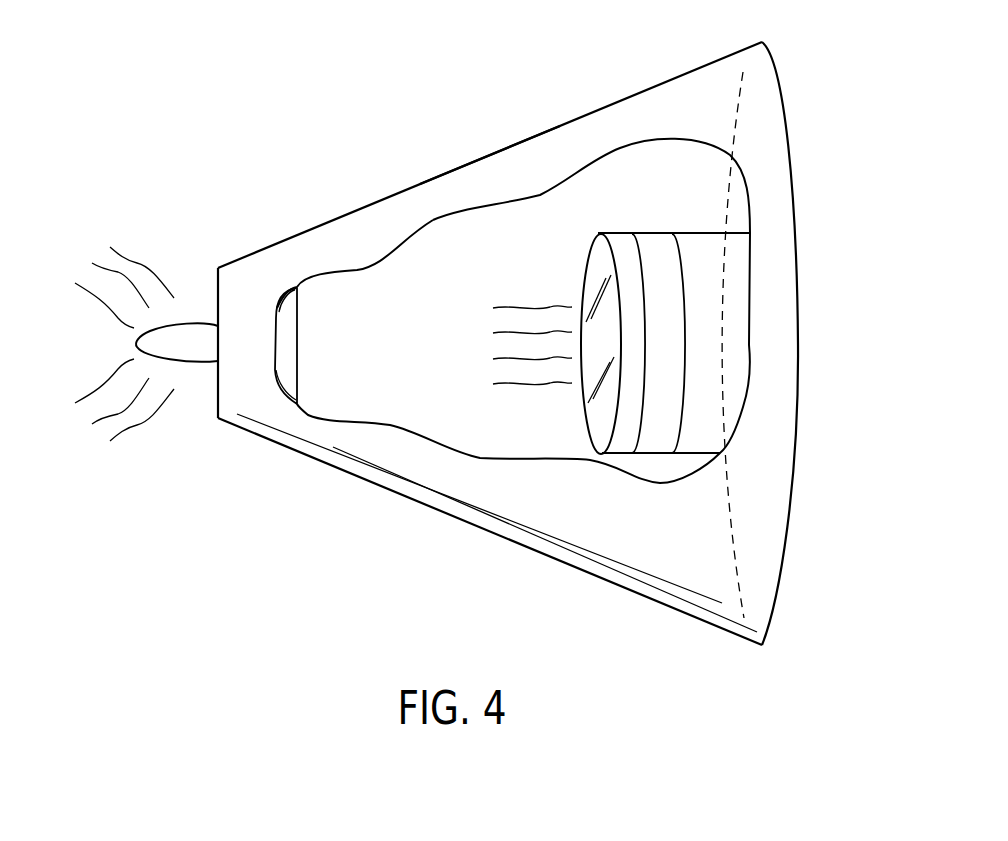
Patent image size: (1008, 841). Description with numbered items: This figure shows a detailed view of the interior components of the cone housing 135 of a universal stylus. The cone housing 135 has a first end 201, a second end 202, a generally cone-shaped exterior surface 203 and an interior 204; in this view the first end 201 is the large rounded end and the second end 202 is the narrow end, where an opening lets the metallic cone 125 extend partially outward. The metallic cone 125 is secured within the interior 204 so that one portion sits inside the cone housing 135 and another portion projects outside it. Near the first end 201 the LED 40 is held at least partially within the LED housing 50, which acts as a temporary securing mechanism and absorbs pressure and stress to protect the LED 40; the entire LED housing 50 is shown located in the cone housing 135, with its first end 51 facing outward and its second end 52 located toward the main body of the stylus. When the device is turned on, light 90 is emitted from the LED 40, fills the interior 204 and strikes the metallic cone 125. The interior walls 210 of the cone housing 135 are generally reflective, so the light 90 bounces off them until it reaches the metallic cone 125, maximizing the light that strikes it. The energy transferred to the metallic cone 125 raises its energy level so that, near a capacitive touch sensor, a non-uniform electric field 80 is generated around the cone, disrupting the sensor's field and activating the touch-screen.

The first end 201 is at (784, 580).
The second end 202 is at (217, 288).
The cone-shaped exterior surface 203 is at (438, 186).
The interior 204 is at (662, 168).
The interior walls 210 is at (363, 285).
The metallic cone 125 is at (183, 350).
The cone housing 135 is at (618, 535).
The non-uniform electric field 80 is at (115, 271).
The light 90 is at (530, 384).
The LED 40 is at (598, 425).
The LED housing 50 is at (674, 355).
The first end 51 is at (619, 234).
The second end 52 is at (673, 234).